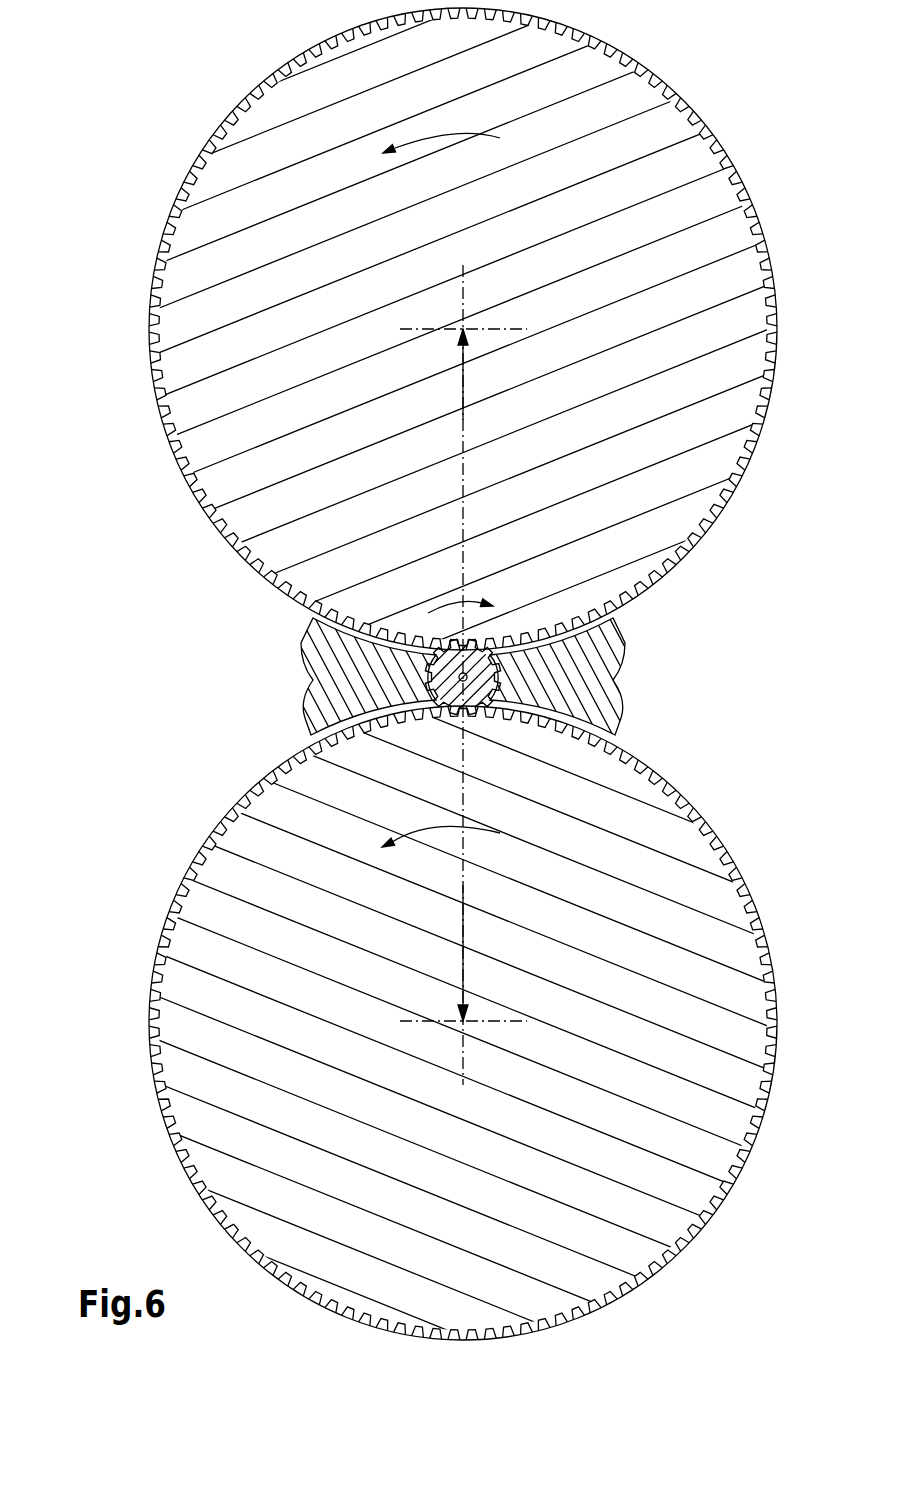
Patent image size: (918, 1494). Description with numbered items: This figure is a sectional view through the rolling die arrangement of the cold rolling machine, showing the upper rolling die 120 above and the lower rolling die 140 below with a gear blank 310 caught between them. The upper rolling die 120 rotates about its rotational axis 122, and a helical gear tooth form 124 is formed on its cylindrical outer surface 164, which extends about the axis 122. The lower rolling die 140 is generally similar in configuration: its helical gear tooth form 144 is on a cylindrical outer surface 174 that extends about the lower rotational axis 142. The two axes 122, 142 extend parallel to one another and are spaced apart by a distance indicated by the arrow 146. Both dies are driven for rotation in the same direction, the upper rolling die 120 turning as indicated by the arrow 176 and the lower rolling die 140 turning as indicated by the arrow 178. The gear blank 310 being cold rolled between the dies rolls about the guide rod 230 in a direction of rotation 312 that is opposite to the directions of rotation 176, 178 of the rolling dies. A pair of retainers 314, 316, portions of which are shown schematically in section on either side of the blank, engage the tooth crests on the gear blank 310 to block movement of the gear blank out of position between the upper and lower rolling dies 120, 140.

The upper rolling die 120 is at (459, 381).
The rotational axis 122 is at (463, 329).
The helical gear tooth form 124 is at (152, 290).
The lower rolling die 140 is at (460, 1032).
The rotational axis 142 is at (463, 1021).
The helical gear tooth form 144 is at (155, 1082).
The arrow 146 is at (465, 378).
The cylindrical outer surface 164 is at (230, 117).
The cylindrical outer surface 174 is at (213, 1213).
The arrow 176 is at (448, 137).
The arrow 178 is at (487, 833).
The guide rod 230 is at (485, 678).
The gear blank 310 is at (477, 722).
The direction of rotation 312 is at (448, 603).
The retainer 314 is at (300, 646).
The retainer 316 is at (623, 672).